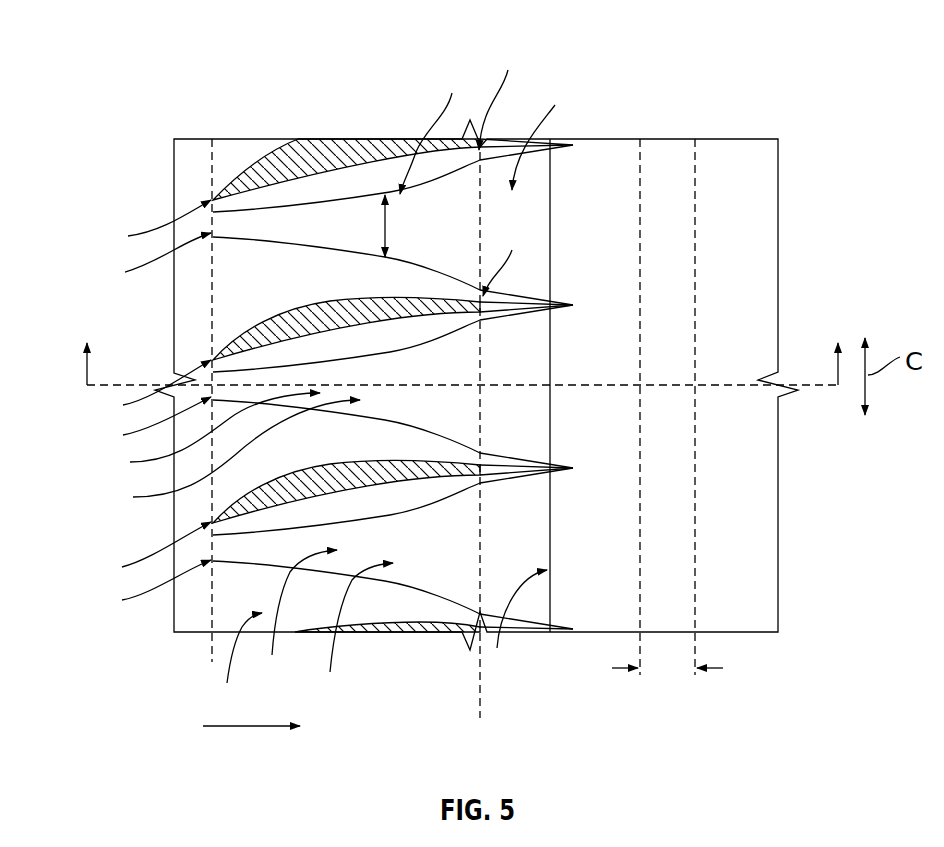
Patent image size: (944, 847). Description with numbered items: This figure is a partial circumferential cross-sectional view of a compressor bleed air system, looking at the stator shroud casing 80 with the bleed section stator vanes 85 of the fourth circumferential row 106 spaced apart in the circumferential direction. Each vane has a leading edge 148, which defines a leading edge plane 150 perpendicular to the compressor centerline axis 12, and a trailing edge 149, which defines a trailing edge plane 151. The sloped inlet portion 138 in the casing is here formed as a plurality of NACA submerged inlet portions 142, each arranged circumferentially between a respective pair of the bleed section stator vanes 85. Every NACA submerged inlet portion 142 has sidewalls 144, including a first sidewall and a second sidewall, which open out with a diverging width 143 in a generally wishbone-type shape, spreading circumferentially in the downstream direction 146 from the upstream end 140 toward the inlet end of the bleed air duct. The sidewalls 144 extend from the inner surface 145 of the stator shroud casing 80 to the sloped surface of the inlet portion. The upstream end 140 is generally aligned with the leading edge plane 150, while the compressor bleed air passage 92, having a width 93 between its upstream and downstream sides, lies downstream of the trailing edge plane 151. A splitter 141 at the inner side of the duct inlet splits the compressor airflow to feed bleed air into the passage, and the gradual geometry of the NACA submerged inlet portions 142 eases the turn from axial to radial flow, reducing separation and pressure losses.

The stator shroud casing 80 is at (187, 152).
The bleed section stator vanes 85 is at (278, 145).
The compressor bleed air passage 92 is at (668, 149).
The width 93 is at (708, 669).
The fourth circumferential row 106 is at (357, 92).
The compressor centerline axis 12 is at (152, 385).
The sloped inlet portion 138 is at (332, 390).
The upstream end 140 is at (113, 425).
The splitter 141 is at (518, 628).
The NACA submerged inlet portions 142 is at (256, 381).
The diverging width 143 is at (381, 226).
The sidewalls 144 is at (404, 185).
The inner surface 145 is at (236, 663).
The downstream direction 146 is at (258, 732).
The leading edge 148 is at (113, 392).
The trailing edge 149 is at (508, 170).
The leading edge plane 150 is at (176, 633).
The trailing edge plane 151 is at (478, 705).